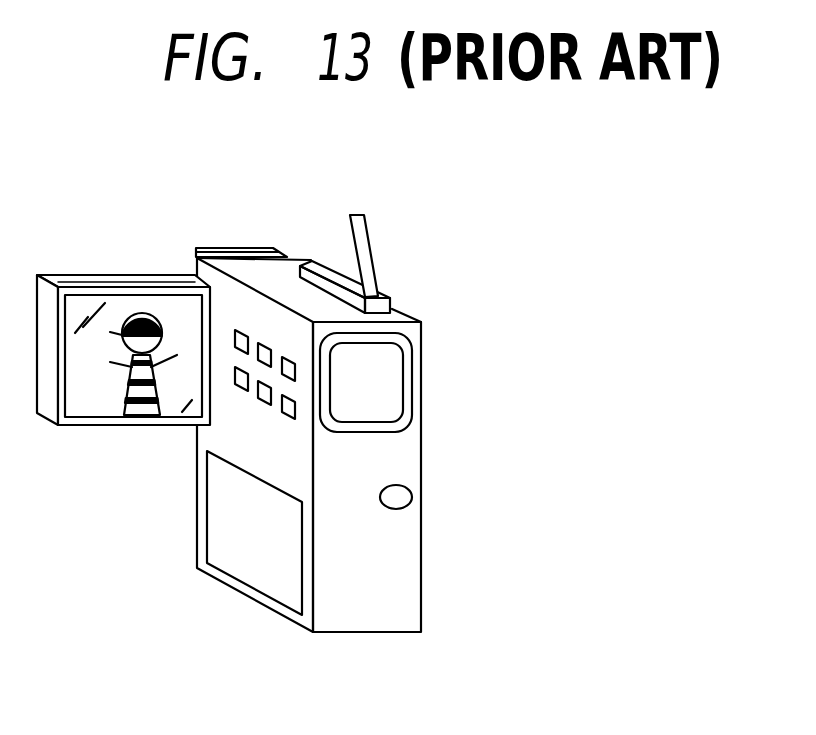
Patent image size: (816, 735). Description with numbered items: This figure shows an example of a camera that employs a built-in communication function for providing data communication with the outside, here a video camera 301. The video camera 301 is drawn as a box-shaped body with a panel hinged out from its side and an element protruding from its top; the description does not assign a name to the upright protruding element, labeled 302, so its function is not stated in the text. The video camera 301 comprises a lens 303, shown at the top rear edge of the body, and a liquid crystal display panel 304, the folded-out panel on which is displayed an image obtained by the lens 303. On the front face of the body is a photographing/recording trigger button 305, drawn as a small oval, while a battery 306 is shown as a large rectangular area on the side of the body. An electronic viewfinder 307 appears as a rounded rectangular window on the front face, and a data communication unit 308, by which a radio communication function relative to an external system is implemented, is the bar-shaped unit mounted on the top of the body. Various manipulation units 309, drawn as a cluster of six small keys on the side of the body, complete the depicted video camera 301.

The video camera 301 is at (421, 588).
The antenna 302 is at (353, 215).
The lens 303 is at (230, 248).
The liquid crystal display panel 304 is at (72, 275).
The photographing/recording trigger button 305 is at (411, 492).
The battery 306 is at (244, 568).
The electronic viewfinder 307 is at (415, 368).
The data communication unit 308 is at (393, 303).
The manipulation units 309 is at (265, 398).